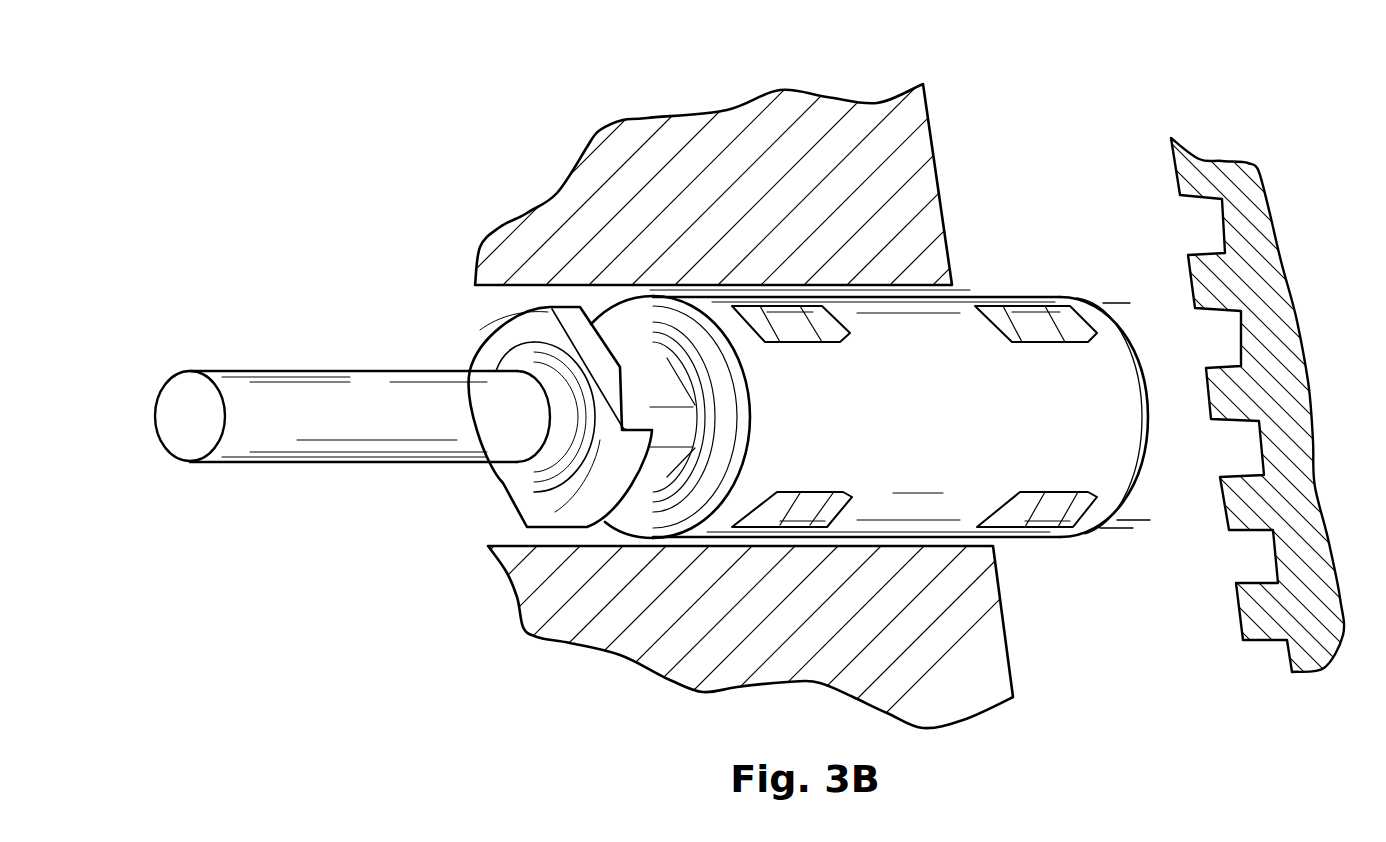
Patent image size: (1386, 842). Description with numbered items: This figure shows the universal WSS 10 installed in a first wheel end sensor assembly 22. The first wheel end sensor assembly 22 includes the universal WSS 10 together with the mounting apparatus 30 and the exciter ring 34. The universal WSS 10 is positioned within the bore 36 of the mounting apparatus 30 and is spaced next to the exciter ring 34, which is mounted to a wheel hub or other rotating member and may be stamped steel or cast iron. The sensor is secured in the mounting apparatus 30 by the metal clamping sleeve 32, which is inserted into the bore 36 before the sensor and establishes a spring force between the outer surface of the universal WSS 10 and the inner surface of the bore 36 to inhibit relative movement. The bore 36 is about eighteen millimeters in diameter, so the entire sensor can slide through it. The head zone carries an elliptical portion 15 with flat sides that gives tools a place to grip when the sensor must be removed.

The universal WSS 10 is at (652, 386).
The elliptical portion 15 is at (505, 500).
The first wheel end sensor assembly 22 is at (750, 383).
The mounting apparatus 30 is at (785, 108).
The metal clamping sleeve 32 is at (1042, 325).
The exciter ring 34 is at (1211, 166).
The bore 36 is at (950, 290).